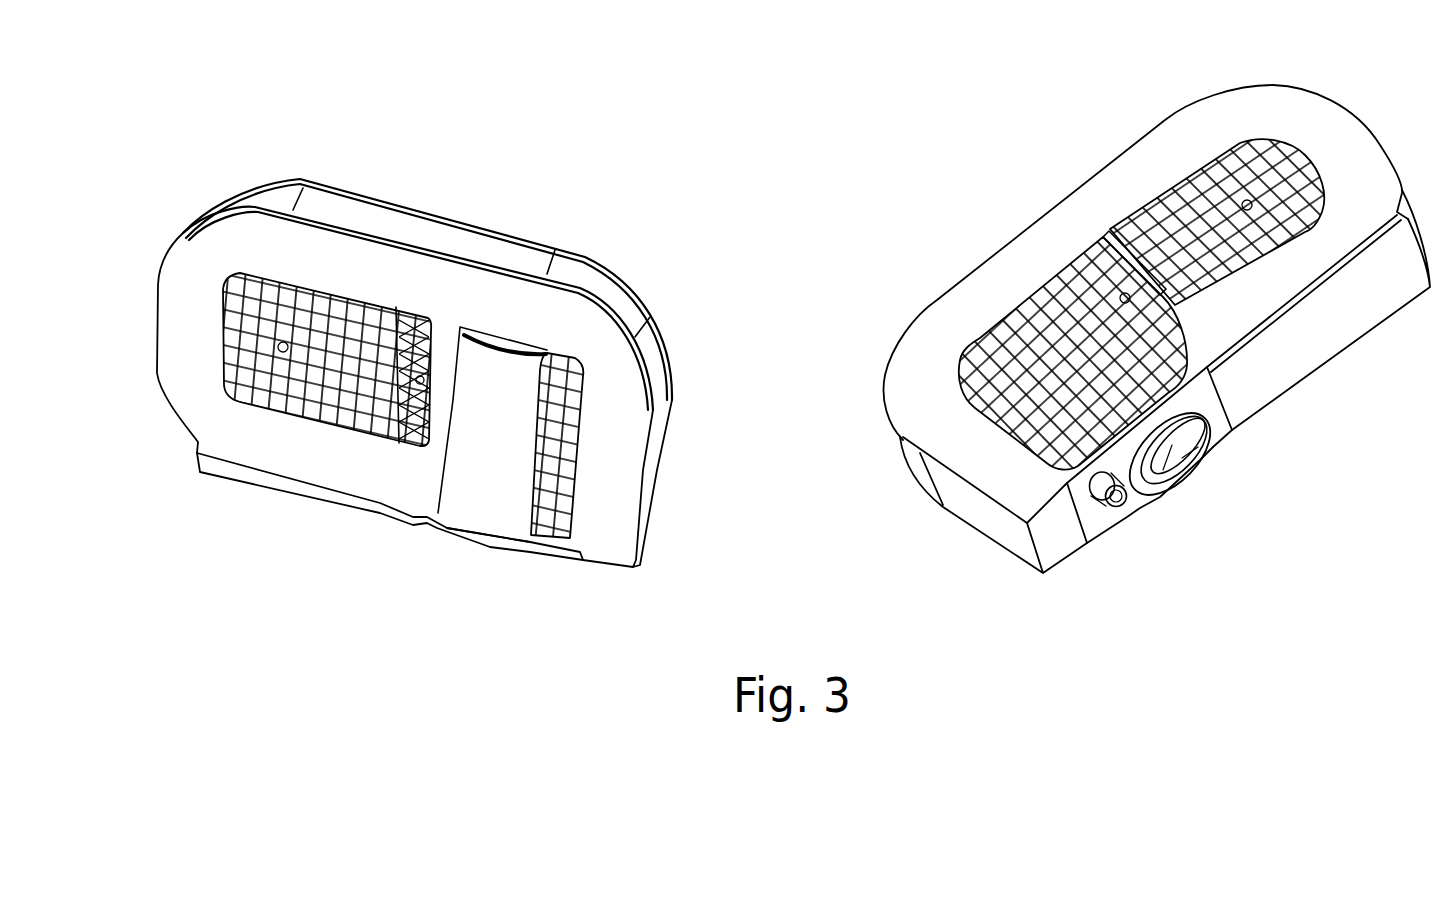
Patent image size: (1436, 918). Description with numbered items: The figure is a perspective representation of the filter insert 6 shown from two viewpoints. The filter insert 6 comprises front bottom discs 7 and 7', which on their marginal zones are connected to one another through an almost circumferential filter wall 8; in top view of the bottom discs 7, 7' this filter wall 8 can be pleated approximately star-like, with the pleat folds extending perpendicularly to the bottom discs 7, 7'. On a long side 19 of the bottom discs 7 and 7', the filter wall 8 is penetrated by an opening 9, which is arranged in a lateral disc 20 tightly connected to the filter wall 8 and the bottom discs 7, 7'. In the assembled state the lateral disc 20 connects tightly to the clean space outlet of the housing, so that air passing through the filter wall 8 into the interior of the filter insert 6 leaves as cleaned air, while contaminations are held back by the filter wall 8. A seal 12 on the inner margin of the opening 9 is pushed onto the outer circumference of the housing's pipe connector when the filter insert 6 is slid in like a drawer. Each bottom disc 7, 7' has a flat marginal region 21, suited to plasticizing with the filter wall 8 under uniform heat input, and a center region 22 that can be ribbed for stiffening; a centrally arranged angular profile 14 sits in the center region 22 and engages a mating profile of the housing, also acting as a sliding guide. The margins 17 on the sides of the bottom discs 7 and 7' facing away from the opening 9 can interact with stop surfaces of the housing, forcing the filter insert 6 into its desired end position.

The filter insert 6 is at (557, 203).
The front bottom disc 7 is at (1218, 157).
The front bottom disc 7' is at (467, 465).
The filter wall 8 is at (650, 317).
The opening 9 is at (490, 540).
The seal 12 is at (1160, 475).
The angular profile 14 is at (395, 306).
The margin 17 is at (330, 203).
The long side 19 is at (1067, 507).
The lateral disc 20 is at (1100, 522).
The marginal region 21 is at (1343, 157).
The center region 22 is at (1047, 367).